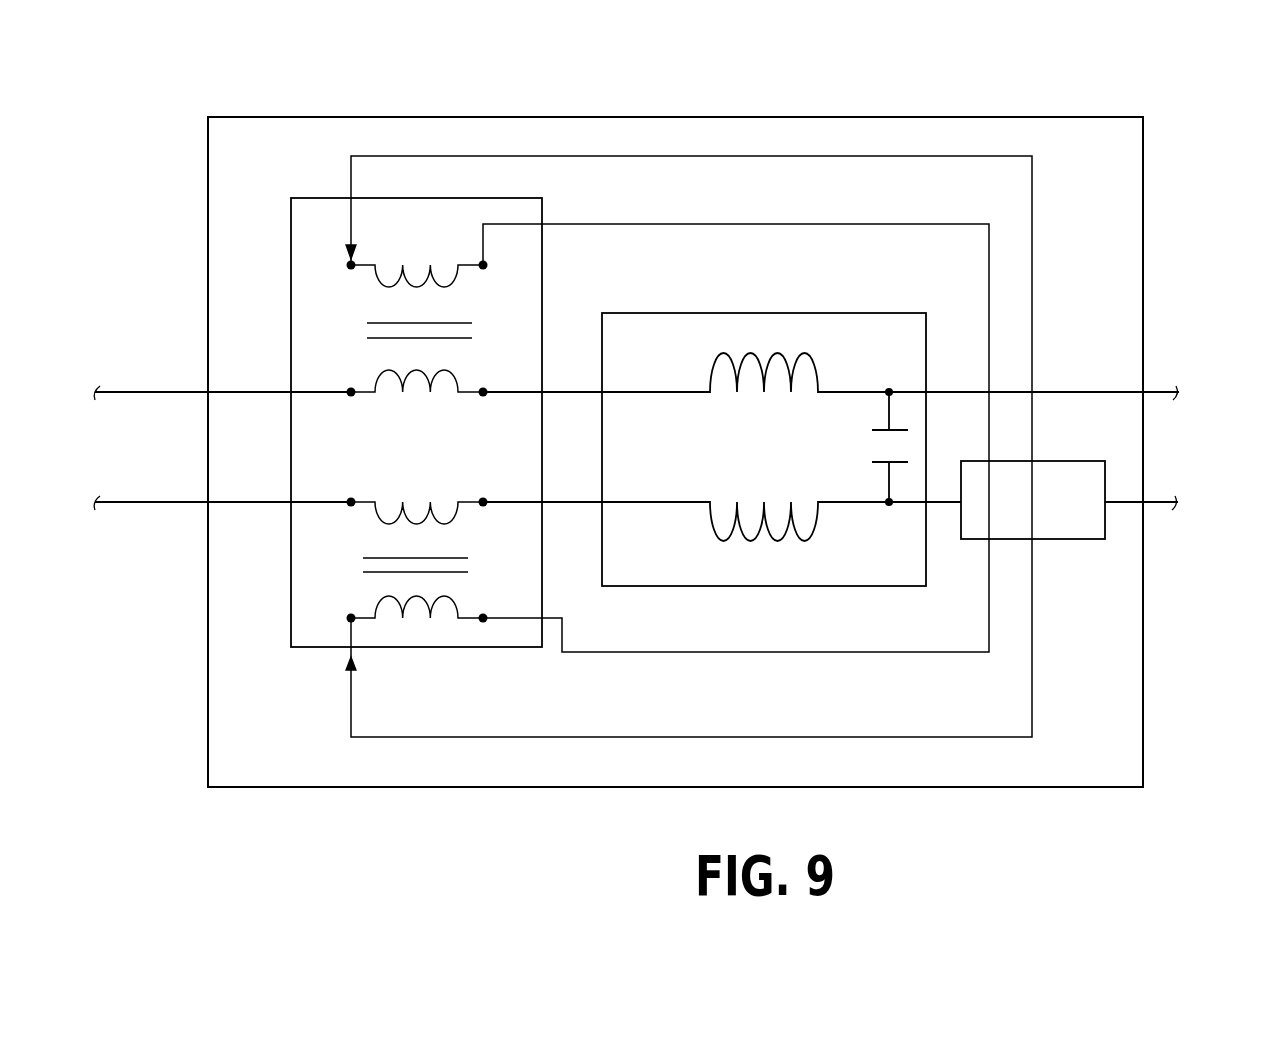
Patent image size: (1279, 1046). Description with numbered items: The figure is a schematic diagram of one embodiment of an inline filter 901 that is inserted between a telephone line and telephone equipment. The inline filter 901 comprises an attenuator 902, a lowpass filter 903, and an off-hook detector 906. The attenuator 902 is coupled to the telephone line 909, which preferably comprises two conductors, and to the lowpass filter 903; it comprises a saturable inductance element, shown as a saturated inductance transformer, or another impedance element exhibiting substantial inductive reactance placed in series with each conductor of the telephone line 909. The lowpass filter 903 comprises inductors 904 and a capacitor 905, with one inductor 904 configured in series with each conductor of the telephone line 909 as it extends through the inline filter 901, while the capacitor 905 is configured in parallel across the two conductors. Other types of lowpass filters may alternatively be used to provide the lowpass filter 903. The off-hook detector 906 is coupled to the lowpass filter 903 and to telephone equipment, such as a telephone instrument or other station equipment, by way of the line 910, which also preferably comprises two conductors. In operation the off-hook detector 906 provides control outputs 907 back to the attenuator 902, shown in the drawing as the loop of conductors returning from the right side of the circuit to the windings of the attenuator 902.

The inline filter 901 is at (272, 106).
The attenuator 902 is at (283, 483).
The lowpass filter 903 is at (860, 313).
The inductors 904 is at (808, 350).
The capacitor 905 is at (870, 446).
The off-hook detector 906 is at (1095, 540).
The control outputs 907 is at (868, 158).
The telephone line 909 is at (118, 392).
The line 910 is at (1163, 390).